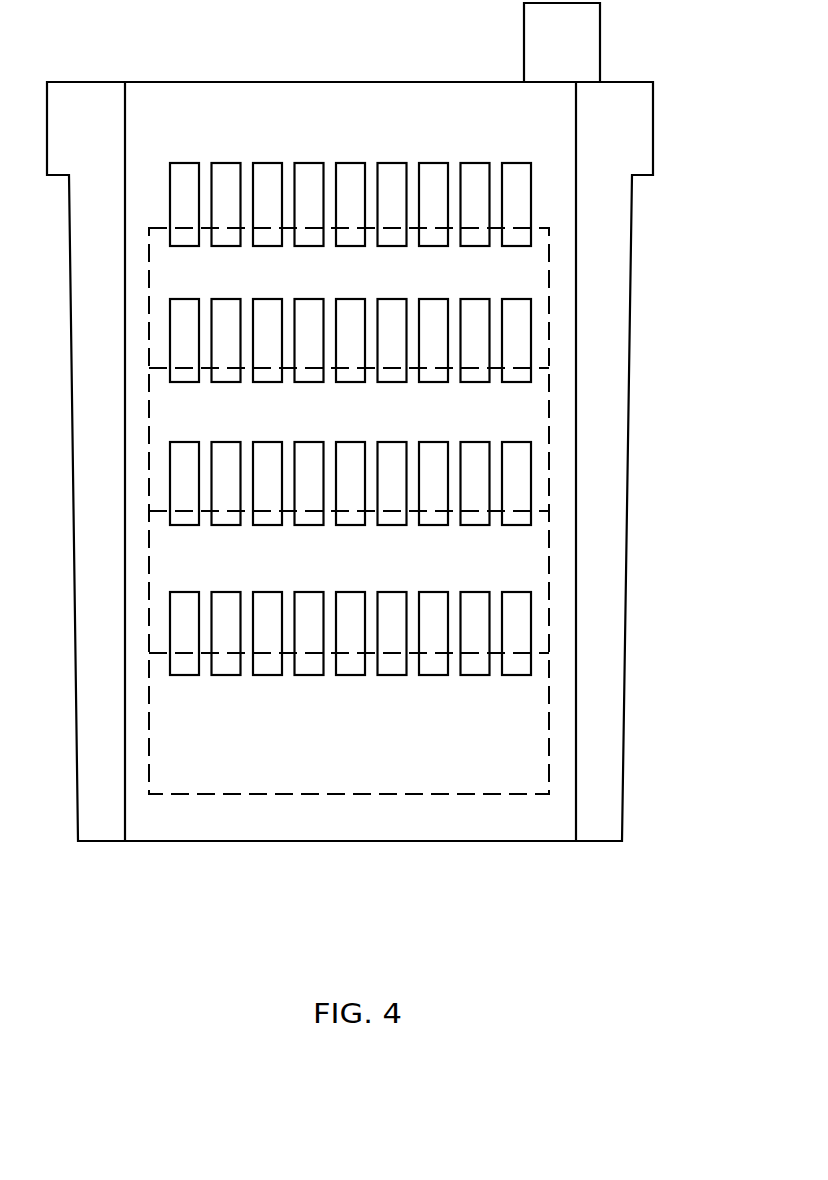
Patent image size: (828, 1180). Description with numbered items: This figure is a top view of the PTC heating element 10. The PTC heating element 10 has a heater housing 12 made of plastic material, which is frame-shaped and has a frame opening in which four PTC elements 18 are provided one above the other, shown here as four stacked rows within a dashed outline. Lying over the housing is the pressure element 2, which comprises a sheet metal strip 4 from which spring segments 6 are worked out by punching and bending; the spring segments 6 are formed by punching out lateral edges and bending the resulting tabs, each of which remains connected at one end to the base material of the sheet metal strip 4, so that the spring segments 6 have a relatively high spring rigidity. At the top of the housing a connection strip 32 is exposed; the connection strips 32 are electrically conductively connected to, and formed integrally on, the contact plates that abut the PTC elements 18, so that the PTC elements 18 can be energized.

The pressure element 2 is at (236, 88).
The sheet metal strip 4 is at (164, 90).
The spring segments 6 is at (433, 175).
The PTC heating element 10 is at (658, 55).
The heater housing 12 is at (622, 236).
The PTC elements 18 is at (540, 405).
The connection strips 32 is at (532, 23).